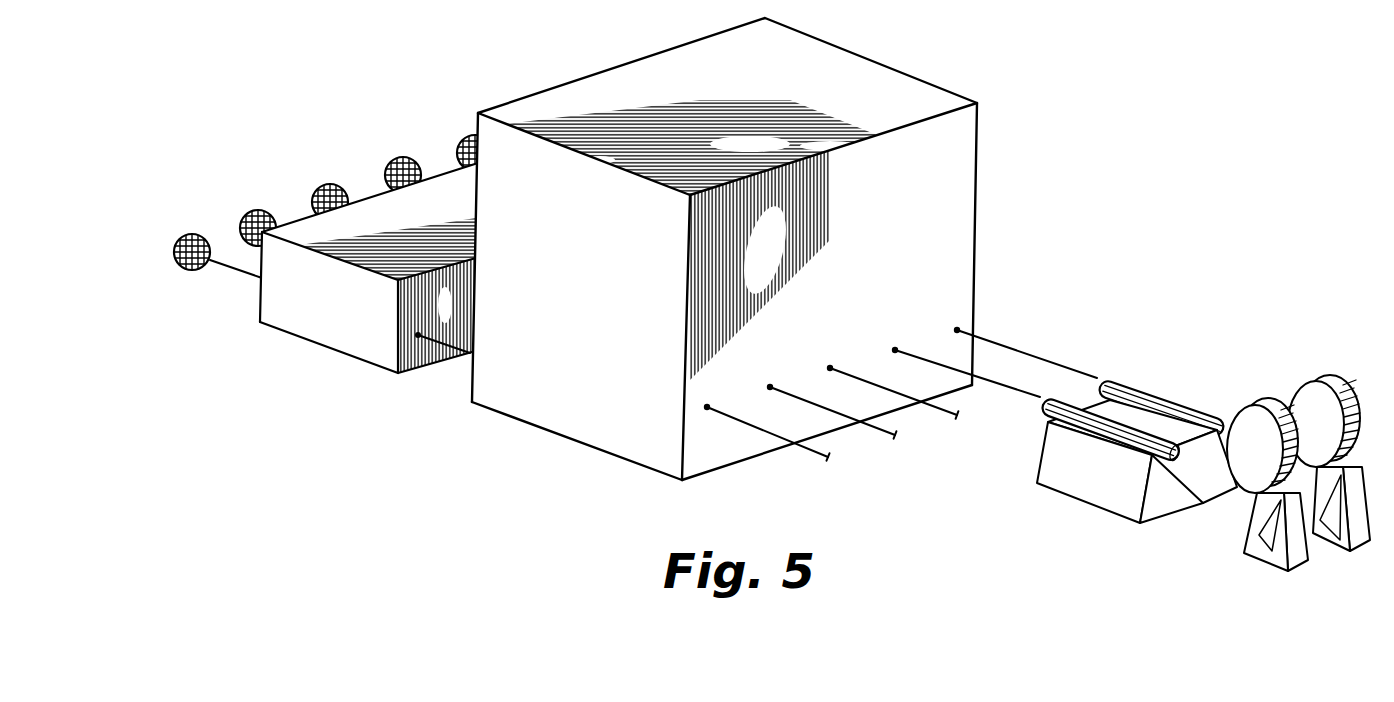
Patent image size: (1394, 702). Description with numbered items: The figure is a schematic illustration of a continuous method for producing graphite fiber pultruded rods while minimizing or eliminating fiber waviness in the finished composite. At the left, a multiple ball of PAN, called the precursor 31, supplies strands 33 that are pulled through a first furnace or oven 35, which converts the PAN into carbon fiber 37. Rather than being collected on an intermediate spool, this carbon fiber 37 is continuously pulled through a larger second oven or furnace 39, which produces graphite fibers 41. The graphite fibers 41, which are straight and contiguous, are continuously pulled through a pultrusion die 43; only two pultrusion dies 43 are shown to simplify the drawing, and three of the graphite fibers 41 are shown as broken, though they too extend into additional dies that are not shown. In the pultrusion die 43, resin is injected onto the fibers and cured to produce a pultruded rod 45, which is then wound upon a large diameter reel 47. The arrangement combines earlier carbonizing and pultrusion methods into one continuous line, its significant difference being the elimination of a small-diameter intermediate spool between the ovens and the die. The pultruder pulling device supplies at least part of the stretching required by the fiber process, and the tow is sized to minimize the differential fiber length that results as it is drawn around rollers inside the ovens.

The precursor 31 is at (174, 257).
The strands 33 is at (233, 270).
The first furnace or oven 35 is at (347, 318).
The carbon fiber 37 is at (435, 343).
The second oven or furnace 39 is at (578, 330).
The graphite fibers 41 is at (993, 341).
The pultrusion die 43 is at (1110, 377).
The pultruded rod 45 is at (1193, 460).
The large diameter reel 47 is at (1245, 428).